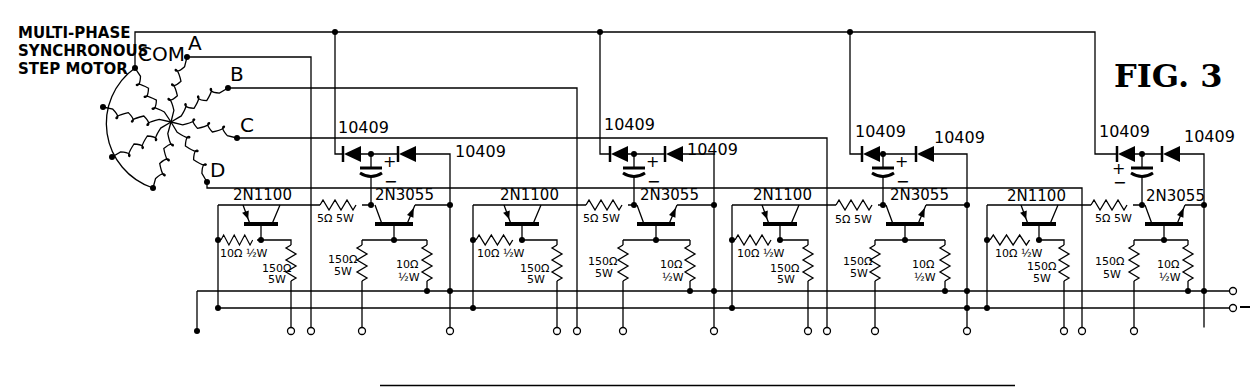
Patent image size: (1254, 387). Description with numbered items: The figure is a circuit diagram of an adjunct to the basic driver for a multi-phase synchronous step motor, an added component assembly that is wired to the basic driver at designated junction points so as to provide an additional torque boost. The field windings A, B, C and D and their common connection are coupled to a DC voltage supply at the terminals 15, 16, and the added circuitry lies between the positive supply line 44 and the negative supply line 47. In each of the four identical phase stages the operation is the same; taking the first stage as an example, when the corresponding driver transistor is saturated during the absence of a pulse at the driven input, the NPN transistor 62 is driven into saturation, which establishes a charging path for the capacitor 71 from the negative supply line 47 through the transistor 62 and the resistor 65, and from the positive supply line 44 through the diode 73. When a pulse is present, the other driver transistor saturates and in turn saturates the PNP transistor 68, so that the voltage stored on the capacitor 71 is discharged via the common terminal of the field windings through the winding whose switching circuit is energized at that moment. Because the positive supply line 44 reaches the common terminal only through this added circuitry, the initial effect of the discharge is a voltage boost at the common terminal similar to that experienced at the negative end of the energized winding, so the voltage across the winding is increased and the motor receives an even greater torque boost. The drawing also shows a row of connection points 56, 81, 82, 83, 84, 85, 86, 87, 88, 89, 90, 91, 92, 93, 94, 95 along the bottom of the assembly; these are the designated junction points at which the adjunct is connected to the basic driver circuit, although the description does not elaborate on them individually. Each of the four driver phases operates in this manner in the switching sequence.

The terminal 15 is at (1224, 288).
The terminal 16 is at (1231, 312).
The positive supply line 44 is at (325, 293).
The negative supply line 47 is at (265, 310).
The output terminal 56 is at (362, 335).
The NPN transistor 62 is at (240, 208).
The resistor 65 is at (348, 195).
The PNP transistor 68 is at (367, 214).
The capacitor 71 is at (401, 177).
The diode 73 is at (406, 143).
The input terminal 81 is at (194, 331).
The terminal 82 is at (291, 335).
The terminal 83 is at (311, 335).
The terminal 84 is at (450, 335).
The terminal 85 is at (557, 335).
The terminal 86 is at (577, 335).
The terminal 87 is at (623, 335).
The terminal 88 is at (714, 335).
The terminal 89 is at (808, 335).
The terminal 90 is at (827, 335).
The terminal 91 is at (875, 335).
The terminal 92 is at (967, 335).
The terminal 93 is at (1064, 335).
The terminal 94 is at (1082, 335).
The terminal 95 is at (1134, 335).